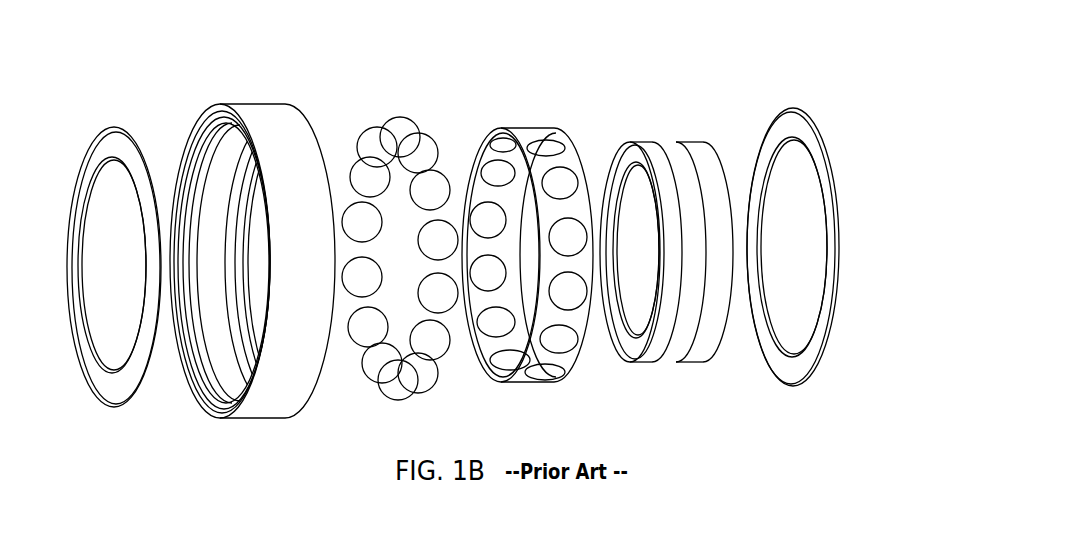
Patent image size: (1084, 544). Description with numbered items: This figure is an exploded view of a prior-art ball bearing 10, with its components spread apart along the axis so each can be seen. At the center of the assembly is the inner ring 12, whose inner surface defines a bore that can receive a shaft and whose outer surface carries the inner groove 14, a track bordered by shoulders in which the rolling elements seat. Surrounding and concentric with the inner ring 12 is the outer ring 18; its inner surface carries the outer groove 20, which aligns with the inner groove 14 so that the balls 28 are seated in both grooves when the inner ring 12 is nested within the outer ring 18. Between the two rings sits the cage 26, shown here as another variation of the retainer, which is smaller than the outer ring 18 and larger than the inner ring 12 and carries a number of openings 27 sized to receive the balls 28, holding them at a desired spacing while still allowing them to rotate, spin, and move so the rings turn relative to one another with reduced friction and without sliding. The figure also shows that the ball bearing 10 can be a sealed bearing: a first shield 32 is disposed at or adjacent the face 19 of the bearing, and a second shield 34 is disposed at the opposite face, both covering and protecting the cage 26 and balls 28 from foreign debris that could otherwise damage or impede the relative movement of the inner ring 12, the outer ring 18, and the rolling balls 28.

The ball bearing 10 is at (845, 96).
The inner ring 12 is at (669, 191).
The inner groove 14 is at (682, 160).
The outer ring 18 is at (246, 216).
The face 19 is at (197, 123).
The outer groove 20 is at (215, 177).
The cage 26 is at (578, 155).
The openings 27 is at (555, 182).
The balls 28 is at (398, 117).
The first shield 32 is at (105, 127).
The second shield 34 is at (797, 108).